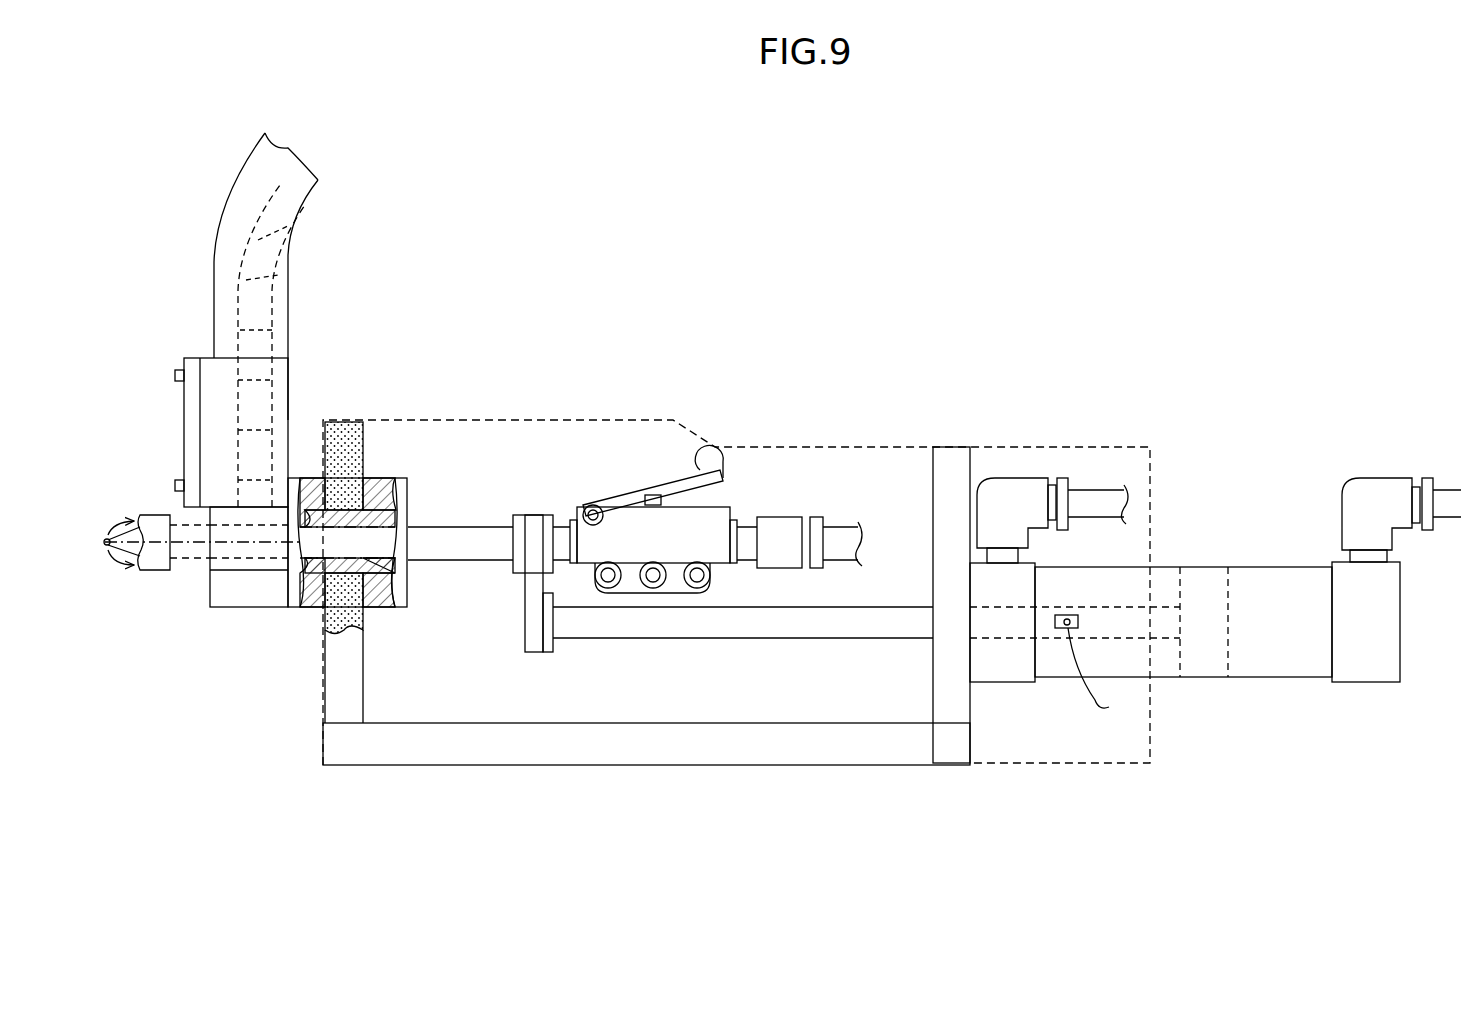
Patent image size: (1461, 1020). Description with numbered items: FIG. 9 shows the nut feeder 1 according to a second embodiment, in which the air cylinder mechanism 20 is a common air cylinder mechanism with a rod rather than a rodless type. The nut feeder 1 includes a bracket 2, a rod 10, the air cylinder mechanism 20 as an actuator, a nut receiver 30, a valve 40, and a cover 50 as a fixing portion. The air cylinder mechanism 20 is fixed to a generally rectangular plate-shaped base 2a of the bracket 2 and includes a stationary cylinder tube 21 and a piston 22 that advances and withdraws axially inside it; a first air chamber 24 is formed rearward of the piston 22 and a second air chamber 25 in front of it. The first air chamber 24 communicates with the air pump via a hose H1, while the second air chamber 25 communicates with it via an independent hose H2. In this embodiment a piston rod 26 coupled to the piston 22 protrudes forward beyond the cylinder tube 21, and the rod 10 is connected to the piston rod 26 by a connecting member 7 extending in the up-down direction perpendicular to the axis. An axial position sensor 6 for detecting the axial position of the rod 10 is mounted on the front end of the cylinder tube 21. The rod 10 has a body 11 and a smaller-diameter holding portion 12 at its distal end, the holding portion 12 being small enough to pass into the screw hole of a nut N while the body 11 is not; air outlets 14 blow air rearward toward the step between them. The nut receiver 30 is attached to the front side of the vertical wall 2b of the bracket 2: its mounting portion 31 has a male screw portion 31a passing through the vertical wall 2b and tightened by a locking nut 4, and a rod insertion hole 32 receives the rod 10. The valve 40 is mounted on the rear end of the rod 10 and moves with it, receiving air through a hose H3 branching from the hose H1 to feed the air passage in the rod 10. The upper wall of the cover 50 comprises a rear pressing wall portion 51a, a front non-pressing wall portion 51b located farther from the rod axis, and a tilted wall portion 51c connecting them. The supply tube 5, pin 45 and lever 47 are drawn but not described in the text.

The nut feeder 1 is at (927, 323).
The bracket 2 is at (931, 768).
The base 2a is at (668, 740).
The vertical wall 2b is at (337, 676).
The locking nut 4 is at (378, 495).
The supply tube 5 is at (290, 270).
The axial position sensor 6 is at (1060, 630).
The connecting member 7 is at (524, 598).
The rod 10 is at (492, 510).
The body 11 is at (432, 530).
The holding portion 12 is at (128, 560).
The air outlets 14 is at (128, 524).
The air cylinder mechanism 20 is at (1185, 658).
The cylinder tube 21 is at (1283, 583).
The piston 22 is at (1207, 650).
The first air chamber 24 is at (1288, 645).
The second air chamber 25 is at (1128, 650).
The piston rod 26 is at (735, 628).
The nut receiver 30 is at (232, 610).
The mounting portion 31 is at (310, 470).
The male screw portion 31a is at (378, 600).
The rod insertion hole 32 is at (312, 535).
The valve 40 is at (740, 510).
The valve actuating pin 45 is at (660, 494).
The lever 47 is at (628, 492).
The cover 50 is at (736, 551).
The pressing wall portion 51a is at (1016, 445).
The non-pressing wall portion 51b is at (556, 418).
The tilted wall portion 51c is at (692, 432).
The hose H1 is at (1440, 500).
The hose H2 is at (1100, 497).
The hose H3 is at (856, 545).
The nut N is at (160, 572).